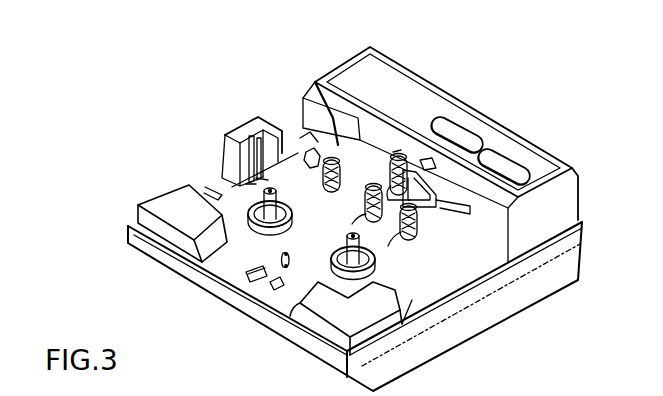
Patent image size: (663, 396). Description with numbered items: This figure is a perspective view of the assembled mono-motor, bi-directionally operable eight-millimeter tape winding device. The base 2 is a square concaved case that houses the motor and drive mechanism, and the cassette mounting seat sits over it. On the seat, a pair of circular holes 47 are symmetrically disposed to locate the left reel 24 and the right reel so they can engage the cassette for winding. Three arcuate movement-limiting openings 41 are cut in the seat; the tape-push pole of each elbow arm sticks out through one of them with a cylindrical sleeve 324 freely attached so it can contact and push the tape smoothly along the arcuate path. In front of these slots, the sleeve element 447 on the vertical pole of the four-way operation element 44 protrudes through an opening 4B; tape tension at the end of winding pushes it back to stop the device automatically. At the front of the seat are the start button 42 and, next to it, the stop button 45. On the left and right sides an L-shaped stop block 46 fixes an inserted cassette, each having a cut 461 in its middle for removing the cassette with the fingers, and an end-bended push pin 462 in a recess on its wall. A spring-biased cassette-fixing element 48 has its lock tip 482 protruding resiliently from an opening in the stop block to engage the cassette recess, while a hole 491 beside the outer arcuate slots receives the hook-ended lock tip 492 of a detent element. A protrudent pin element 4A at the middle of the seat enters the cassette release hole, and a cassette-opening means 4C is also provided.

The base 2 is at (470, 331).
The protrudent pin element 4A is at (290, 262).
The opening 4B is at (419, 176).
The cassette-opening means 4C is at (315, 81).
The left reel 24 is at (262, 230).
The arcuate movement-limiting opening 41 is at (340, 182).
The start button 42 is at (461, 133).
The four-way operation element 44 is at (420, 201).
The stop button 45 is at (508, 165).
The L-shaped stop block 46 is at (255, 114).
The circular hole 47 is at (291, 219).
The spring-biased cassette-fixing element 48 is at (193, 205).
The cylindrical sleeve 324 is at (277, 193).
The sleeve element 447 is at (397, 158).
The cut 461 is at (410, 300).
The end-bended push pin 462 is at (215, 160).
The lock tip 482 is at (212, 192).
The hole 491 is at (306, 161).
The hook-ended lock tip 492 is at (303, 134).